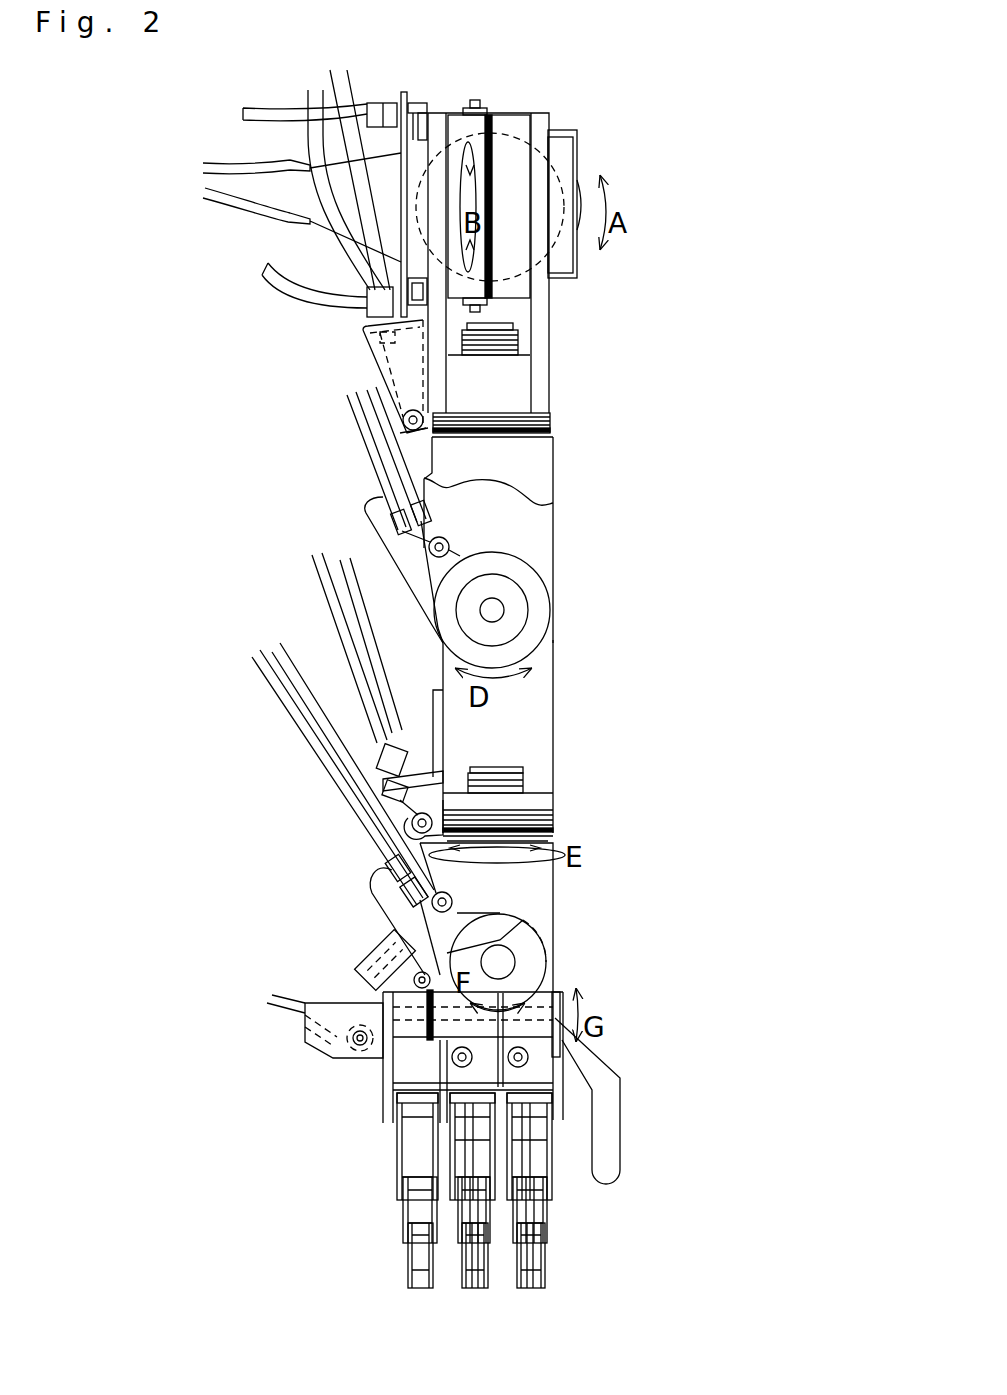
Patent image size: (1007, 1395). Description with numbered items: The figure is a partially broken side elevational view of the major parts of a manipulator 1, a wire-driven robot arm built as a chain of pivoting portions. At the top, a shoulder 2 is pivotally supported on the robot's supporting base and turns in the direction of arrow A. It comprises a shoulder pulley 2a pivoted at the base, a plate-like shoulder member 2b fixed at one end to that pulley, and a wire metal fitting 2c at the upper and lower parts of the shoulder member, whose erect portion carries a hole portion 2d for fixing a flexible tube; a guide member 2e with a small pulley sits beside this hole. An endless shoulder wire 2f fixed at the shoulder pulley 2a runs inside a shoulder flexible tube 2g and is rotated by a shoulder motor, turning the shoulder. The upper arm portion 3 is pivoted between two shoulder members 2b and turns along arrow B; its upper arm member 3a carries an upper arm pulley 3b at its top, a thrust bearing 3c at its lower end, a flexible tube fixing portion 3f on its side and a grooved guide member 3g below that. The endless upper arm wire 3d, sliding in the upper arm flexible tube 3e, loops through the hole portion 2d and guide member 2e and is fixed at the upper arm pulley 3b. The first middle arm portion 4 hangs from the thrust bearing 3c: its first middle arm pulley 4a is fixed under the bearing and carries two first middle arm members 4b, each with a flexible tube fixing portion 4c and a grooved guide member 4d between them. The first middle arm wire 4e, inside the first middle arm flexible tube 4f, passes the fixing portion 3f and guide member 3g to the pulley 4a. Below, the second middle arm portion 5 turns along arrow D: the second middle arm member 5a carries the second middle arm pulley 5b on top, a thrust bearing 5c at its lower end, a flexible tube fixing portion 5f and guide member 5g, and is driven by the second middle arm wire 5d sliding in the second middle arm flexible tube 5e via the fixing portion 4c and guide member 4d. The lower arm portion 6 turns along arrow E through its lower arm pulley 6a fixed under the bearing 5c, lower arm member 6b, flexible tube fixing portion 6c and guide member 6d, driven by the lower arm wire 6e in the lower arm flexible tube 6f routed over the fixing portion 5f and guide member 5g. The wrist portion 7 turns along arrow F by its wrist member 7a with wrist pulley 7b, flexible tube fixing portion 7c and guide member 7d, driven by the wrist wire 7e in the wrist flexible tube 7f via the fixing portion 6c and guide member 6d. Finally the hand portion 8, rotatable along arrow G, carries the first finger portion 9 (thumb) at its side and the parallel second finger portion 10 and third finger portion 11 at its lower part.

The manipulator 1 is at (260, 493).
The shoulder 2 is at (622, 170).
The shoulder pulley 2a is at (555, 173).
The shoulder member 2b is at (563, 138).
The wire metal fitting 2c is at (402, 93).
The hole portion for fixing a flexible tube 2d is at (421, 103).
The guide member 2e is at (476, 100).
The shoulder wire 2f is at (328, 226).
The shoulder flexible tube 2g is at (255, 205).
The upper arm portion 3 is at (625, 332).
The upper arm member 3a is at (545, 320).
The upper arm pulley 3b is at (523, 283).
The thrust bearing 3c is at (548, 417).
The upper arm wire 3d is at (490, 123).
The upper arm flexible tube 3e is at (283, 110).
The flexible tube fixing portion 3f is at (370, 352).
The guide member 3g is at (400, 428).
The first middle arm portion 4 is at (600, 520).
The first middle arm pulley 4a is at (552, 433).
The first middle arm member 4b is at (533, 467).
The flexible tube fixing portion 4c is at (382, 522).
The guide member 4d is at (423, 550).
The first middle arm wire 4e is at (390, 362).
The first middle arm flexible tube 4f is at (333, 143).
The second middle arm portion 5 is at (590, 752).
The second middle arm member 5a is at (547, 687).
The second middle arm pulley 5b is at (547, 582).
The thrust bearing 5c is at (547, 813).
The second middle arm wire 5d is at (423, 587).
The second middle arm flexible tube 5e is at (398, 473).
The flexible tube fixing portion 5f is at (430, 775).
The guide member 5g is at (408, 825).
The lower arm portion 6 is at (618, 875).
The lower arm pulley 6a is at (547, 838).
The lower arm member 6b is at (548, 930).
The flexible tube fixing portion 6c is at (377, 882).
The guide member 6d is at (453, 900).
The lower arm wire 6e is at (390, 800).
The lower arm flexible tube 6f is at (366, 668).
The wrist portion 7 is at (610, 958).
The wrist member 7a is at (533, 960).
The wrist pulley 7b is at (523, 920).
The flexible tube fixing portion 7c is at (372, 958).
The guide member 7d is at (413, 982).
The wrist wire 7e is at (410, 920).
The wrist flexible tube 7f is at (287, 708).
The hand portion 8 is at (617, 1025).
The first finger portion 9 is at (623, 1153).
The second finger portion 10 is at (550, 1238).
The third finger portion 11 is at (398, 1228).